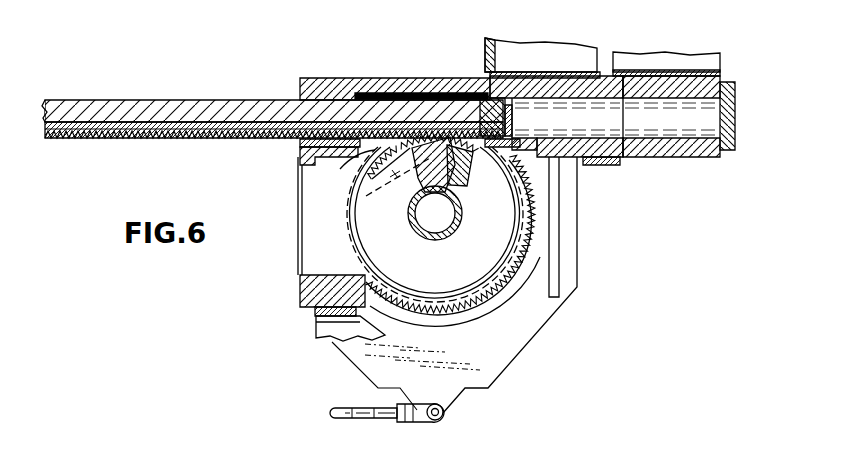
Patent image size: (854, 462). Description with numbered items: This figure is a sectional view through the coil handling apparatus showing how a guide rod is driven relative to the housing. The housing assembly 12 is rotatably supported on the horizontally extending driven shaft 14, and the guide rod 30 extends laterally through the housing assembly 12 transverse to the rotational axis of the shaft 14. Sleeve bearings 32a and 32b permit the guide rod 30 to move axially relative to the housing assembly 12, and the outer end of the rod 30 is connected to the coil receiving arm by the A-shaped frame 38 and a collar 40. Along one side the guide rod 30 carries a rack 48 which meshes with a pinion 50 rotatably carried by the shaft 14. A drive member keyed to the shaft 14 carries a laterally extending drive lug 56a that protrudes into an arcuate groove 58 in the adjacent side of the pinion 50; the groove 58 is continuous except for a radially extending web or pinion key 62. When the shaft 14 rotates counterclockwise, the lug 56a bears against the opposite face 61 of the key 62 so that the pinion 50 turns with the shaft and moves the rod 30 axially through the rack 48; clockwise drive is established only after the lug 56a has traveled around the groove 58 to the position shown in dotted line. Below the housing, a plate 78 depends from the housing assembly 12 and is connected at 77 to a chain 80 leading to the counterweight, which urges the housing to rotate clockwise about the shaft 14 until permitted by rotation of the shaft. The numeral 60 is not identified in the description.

The housing assembly 12 is at (312, 294).
The shaft 14 is at (435, 233).
The guide rods 30 is at (140, 100).
The sleeve bearing 32a is at (340, 92).
The sleeve bearing 32b is at (597, 96).
The A-shaped frame 38 is at (662, 62).
The collars 40 is at (680, 158).
The racks 48 is at (175, 139).
The pinions 50 is at (340, 198).
The drive lug 56a is at (350, 204).
The arcuate groove 58 is at (368, 238).
The pinion sector 60 is at (420, 178).
The opposite face 61 is at (466, 181).
The pinion key 62 is at (425, 145).
The connection point 77 is at (443, 421).
The plate 78 is at (522, 349).
The chain 80 is at (362, 419).